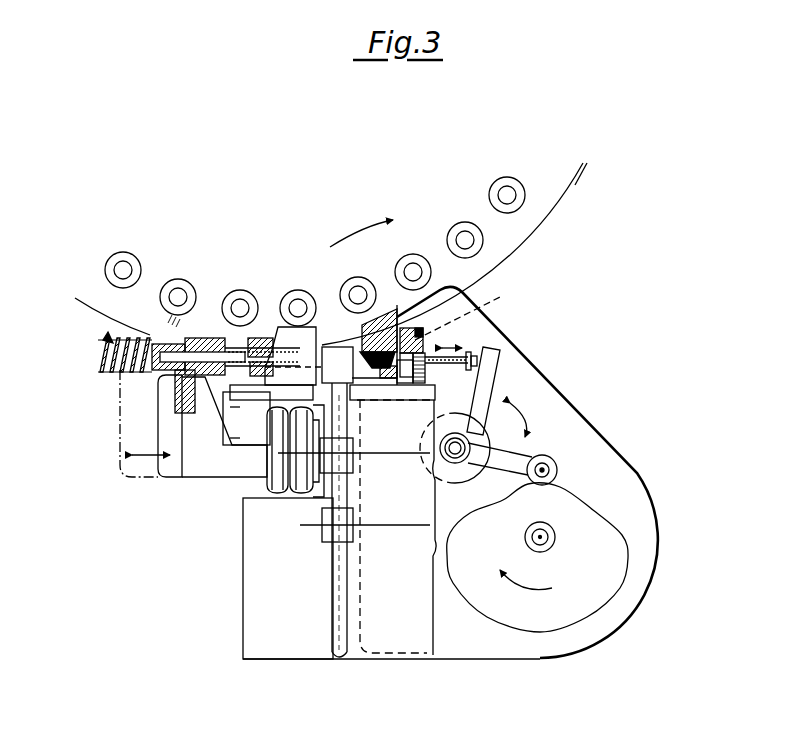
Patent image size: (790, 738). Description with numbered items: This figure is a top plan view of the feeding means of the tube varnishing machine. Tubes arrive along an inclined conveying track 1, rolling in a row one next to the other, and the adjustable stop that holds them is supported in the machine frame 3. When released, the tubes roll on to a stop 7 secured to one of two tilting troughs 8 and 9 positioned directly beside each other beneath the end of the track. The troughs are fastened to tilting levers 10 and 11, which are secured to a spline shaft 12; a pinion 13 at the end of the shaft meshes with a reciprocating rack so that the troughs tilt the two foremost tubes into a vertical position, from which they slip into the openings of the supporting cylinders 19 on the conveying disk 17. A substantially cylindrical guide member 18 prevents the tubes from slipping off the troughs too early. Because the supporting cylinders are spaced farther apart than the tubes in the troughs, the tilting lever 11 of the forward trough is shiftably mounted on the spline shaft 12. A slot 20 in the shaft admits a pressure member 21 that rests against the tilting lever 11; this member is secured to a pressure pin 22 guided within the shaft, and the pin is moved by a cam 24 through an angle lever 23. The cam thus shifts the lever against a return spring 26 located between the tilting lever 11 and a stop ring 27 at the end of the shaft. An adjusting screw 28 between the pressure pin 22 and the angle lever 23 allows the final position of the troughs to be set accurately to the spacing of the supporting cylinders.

The conveying track 1 is at (343, 540).
The machine frame 3 is at (288, 653).
The stop 7 is at (275, 422).
The tilting trough 8 is at (303, 485).
The tilting trough 9 is at (283, 485).
The tilting lever 10 is at (237, 442).
The tilting lever 11 is at (168, 468).
The spline shaft 12 is at (135, 337).
The pinion 13 is at (430, 340).
The conveying disk 17 is at (578, 187).
The guide member 18 is at (293, 343).
The supporting cylinders 19 is at (130, 253).
The slot 20 is at (212, 337).
The pressure member 21 is at (232, 337).
The pressure pin 22 is at (260, 337).
The angle lever 23 is at (490, 396).
The cam 24 is at (577, 512).
The return spring 26 is at (127, 370).
The stop ring 27 is at (102, 370).
The adjusting screw 28 is at (483, 398).